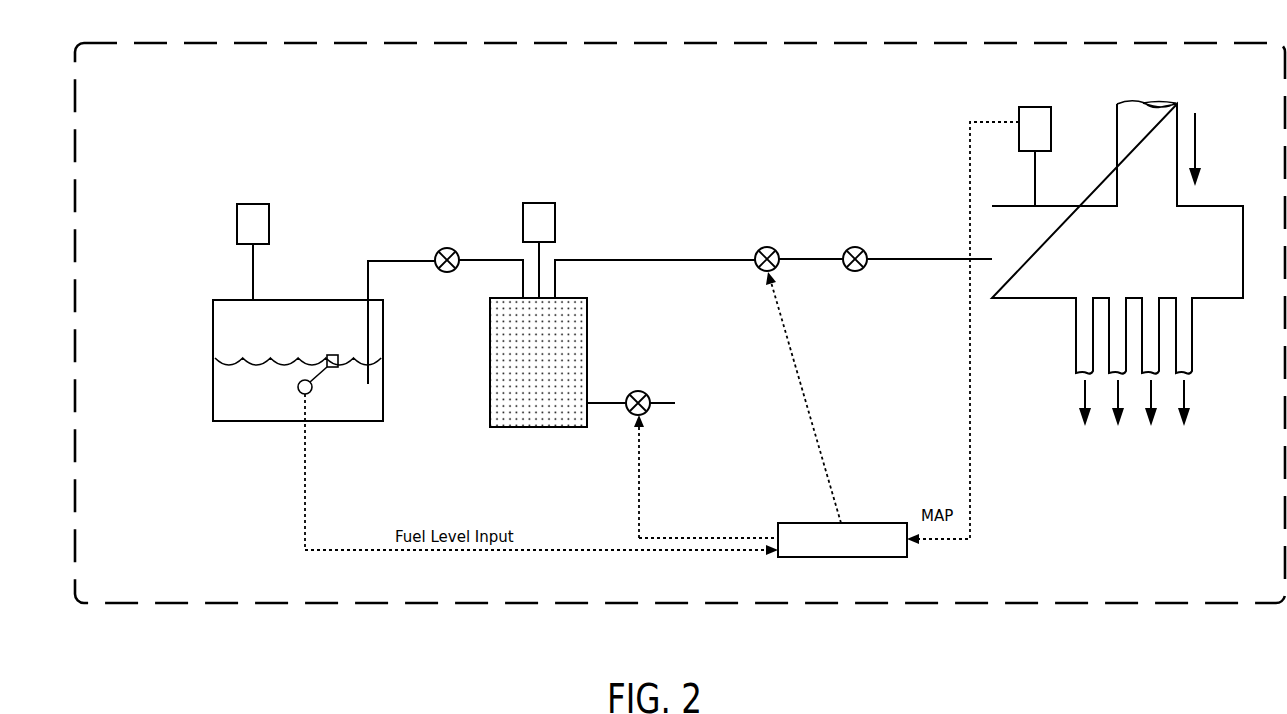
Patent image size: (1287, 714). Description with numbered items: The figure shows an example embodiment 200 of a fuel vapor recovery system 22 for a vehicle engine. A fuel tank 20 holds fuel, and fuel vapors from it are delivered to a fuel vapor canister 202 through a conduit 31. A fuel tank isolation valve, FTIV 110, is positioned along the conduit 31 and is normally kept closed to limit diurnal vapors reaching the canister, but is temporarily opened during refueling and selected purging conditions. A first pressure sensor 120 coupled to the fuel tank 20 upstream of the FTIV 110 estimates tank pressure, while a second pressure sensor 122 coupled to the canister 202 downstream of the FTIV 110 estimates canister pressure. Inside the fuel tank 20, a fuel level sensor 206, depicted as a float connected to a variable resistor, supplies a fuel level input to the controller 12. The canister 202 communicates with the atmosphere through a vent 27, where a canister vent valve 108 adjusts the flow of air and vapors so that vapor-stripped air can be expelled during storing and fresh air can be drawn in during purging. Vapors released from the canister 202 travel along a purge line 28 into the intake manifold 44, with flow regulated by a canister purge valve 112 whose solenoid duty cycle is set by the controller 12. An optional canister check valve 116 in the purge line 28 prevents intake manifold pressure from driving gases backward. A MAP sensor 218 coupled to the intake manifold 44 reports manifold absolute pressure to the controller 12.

The example embodiment of fuel vapor recovery system 200 is at (197, 114).
The fuel vapor recovery system 22 is at (857, 43).
The fuel tank 20 is at (383, 401).
The fuel level sensor 206 is at (311, 389).
The first pressure sensor 120 is at (237, 229).
The conduit 31 is at (403, 259).
The fuel tank isolation valve (FTIV) 110 is at (451, 249).
The second pressure sensor 122 is at (523, 212).
The fuel vapor canister 202 is at (587, 353).
The vent 27 is at (604, 404).
The canister vent valve 108 is at (641, 391).
The canister purge valve 112 is at (769, 248).
The canister check valve 116 is at (857, 248).
The purge line 28 is at (940, 259).
The intake manifold 44 is at (1117, 263).
The MAP sensor 218 is at (1035, 107).
The controller 12 is at (868, 523).